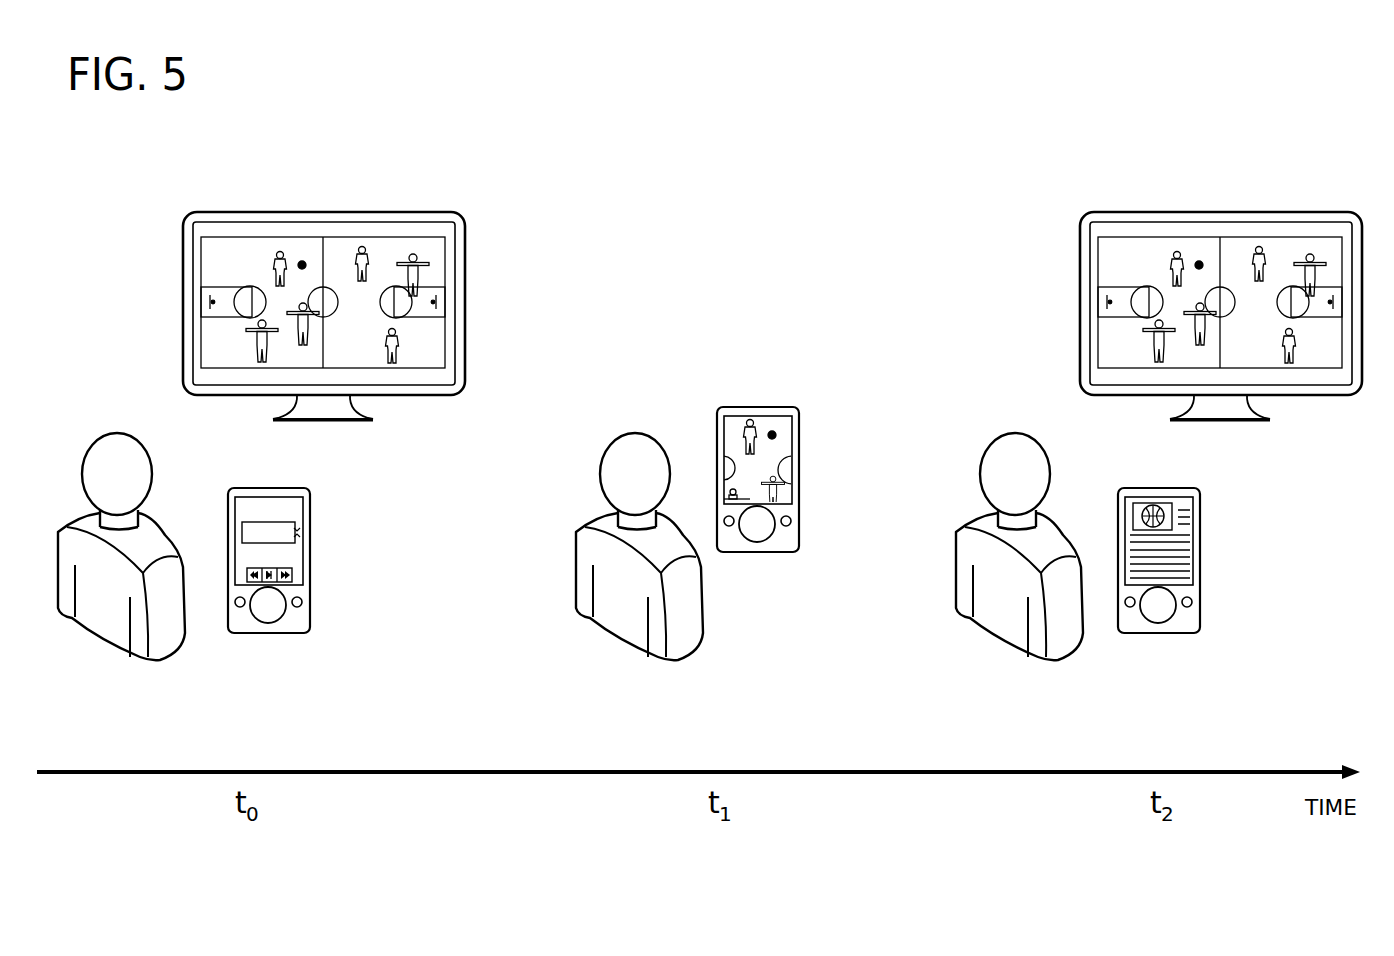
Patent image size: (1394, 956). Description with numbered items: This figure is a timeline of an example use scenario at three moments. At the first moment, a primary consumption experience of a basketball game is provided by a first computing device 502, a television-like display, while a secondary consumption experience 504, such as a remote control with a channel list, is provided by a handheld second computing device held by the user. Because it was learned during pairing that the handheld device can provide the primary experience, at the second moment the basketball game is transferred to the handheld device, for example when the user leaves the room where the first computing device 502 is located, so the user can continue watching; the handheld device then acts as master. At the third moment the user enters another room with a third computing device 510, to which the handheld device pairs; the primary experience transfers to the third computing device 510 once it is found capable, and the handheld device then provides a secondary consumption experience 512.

The first computing device 502 is at (265, 320).
The secondary consumption experience 504 is at (258, 472).
The third computing device 510 is at (1173, 320).
The secondary consumption experience 512 is at (1151, 471).